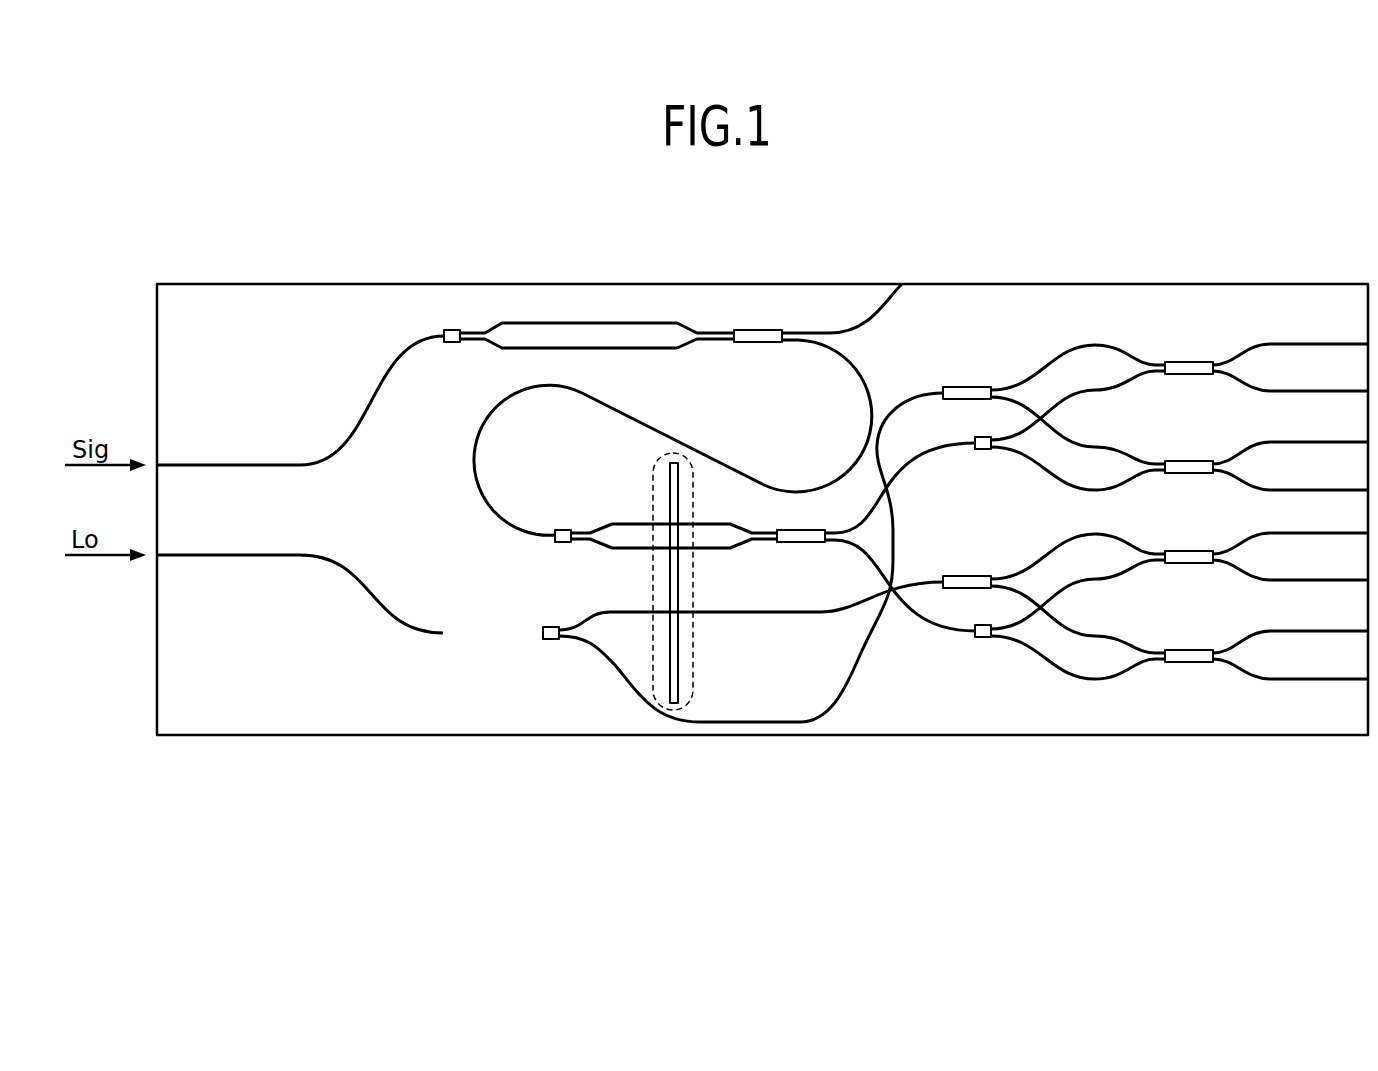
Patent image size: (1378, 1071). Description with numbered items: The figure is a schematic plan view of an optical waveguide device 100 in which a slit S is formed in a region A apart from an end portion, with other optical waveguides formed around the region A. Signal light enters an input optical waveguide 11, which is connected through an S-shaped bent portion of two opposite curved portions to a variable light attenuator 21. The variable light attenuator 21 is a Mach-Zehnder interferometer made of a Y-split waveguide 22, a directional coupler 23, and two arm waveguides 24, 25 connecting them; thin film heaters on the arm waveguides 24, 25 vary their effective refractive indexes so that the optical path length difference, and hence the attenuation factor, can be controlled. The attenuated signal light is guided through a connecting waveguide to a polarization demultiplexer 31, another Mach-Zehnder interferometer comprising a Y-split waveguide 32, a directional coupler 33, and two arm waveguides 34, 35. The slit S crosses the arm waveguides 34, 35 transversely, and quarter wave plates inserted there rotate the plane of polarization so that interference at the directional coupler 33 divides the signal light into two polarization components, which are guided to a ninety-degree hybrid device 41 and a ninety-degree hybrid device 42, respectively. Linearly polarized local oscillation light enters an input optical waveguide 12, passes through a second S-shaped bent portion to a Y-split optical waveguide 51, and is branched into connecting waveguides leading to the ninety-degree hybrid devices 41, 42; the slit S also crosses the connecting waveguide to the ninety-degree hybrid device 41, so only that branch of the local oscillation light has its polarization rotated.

The optical waveguide device 100 is at (344, 252).
The input optical waveguide 11 is at (233, 463).
The input optical waveguide 12 is at (232, 560).
The variable light attenuator 21 is at (609, 312).
The Y-split waveguide 22 is at (448, 330).
The directional coupler 23 is at (755, 330).
The arm waveguide 24 is at (591, 323).
The arm waveguide 25 is at (518, 348).
The polarization demultiplexer 31 is at (678, 516).
The Y-split waveguide 32 is at (560, 529).
The directional coupler 33 is at (801, 542).
The arm waveguide 34 is at (624, 524).
The arm waveguide 35 is at (625, 548).
The 90-degree hybrid device 41 is at (1183, 348).
The 90-degree hybrid device 42 is at (1183, 685).
The Y-split optical waveguide 51 is at (550, 627).
The slit S is at (678, 703).
The region A is at (660, 710).